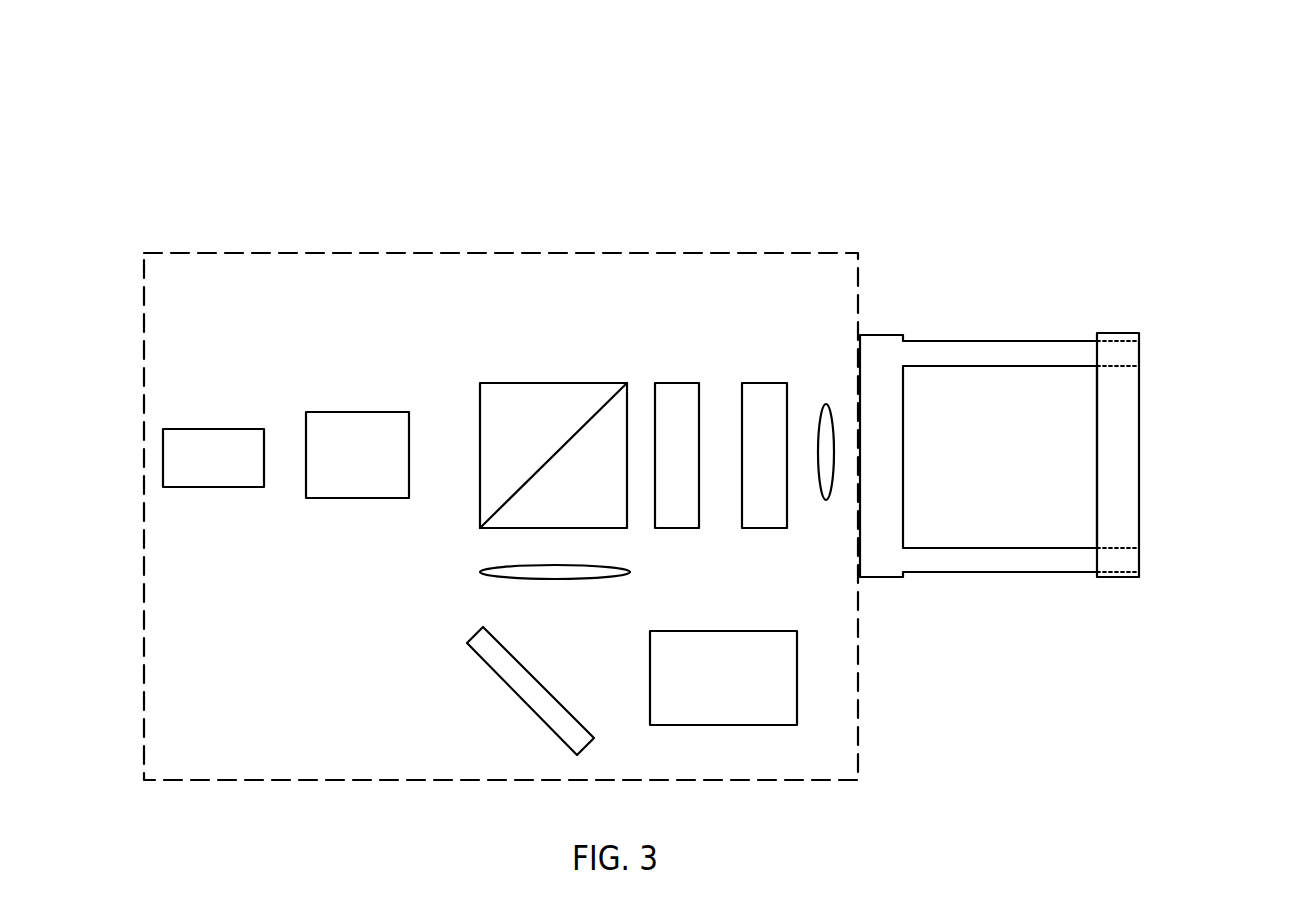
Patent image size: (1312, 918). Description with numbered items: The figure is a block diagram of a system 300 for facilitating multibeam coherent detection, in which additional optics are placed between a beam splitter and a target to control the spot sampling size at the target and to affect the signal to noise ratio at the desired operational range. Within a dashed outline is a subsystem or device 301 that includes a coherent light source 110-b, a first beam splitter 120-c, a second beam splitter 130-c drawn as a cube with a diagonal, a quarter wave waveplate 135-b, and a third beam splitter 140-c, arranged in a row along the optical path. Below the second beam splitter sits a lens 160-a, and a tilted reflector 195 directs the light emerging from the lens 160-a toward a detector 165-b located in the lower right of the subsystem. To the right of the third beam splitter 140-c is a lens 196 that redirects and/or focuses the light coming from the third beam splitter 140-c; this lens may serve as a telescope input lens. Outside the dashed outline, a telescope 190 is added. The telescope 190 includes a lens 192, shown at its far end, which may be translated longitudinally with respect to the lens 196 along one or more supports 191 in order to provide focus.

The system 300 is at (1240, 63).
The subsystem or device 301 is at (430, 253).
The coherent light source 110-b is at (224, 429).
The first beam splitter 120-c is at (367, 412).
The second beam splitter 130-c is at (566, 383).
The quarter wave waveplate 135-b is at (679, 383).
The third beam splitter 140-c is at (761, 383).
The lens 196 is at (826, 406).
The lens 160-a is at (482, 571).
The reflector 195 is at (468, 642).
The detector 165-b is at (766, 631).
The telescope 190 is at (1000, 226).
The supports 191 is at (1010, 341).
The lens 192 is at (1127, 333).